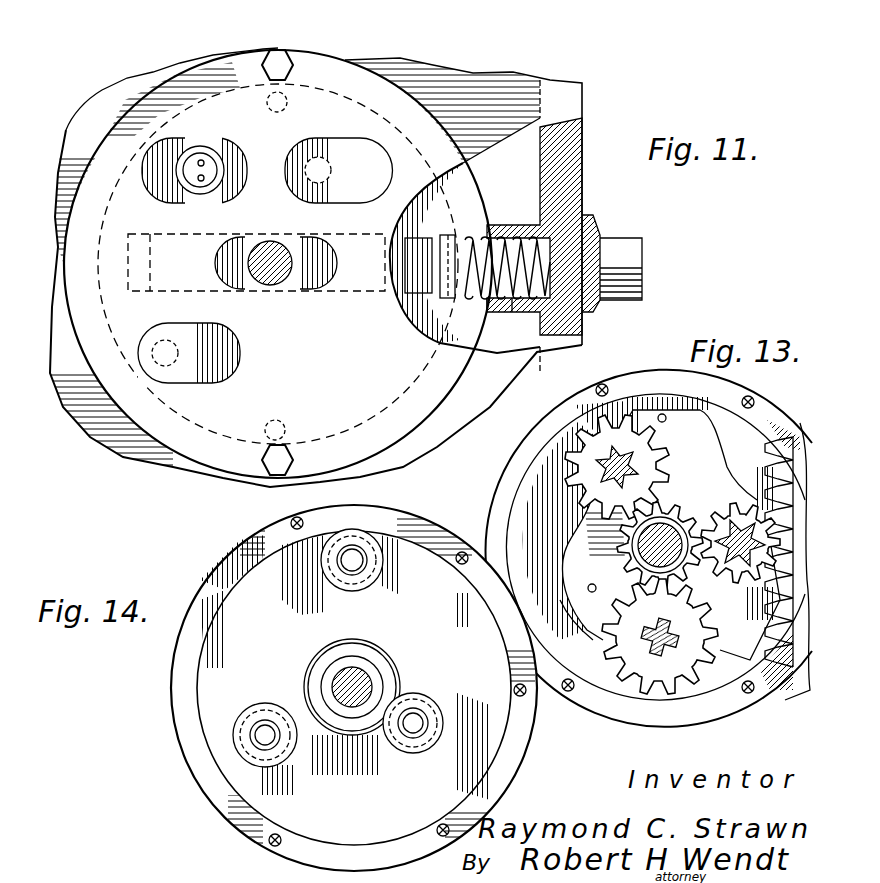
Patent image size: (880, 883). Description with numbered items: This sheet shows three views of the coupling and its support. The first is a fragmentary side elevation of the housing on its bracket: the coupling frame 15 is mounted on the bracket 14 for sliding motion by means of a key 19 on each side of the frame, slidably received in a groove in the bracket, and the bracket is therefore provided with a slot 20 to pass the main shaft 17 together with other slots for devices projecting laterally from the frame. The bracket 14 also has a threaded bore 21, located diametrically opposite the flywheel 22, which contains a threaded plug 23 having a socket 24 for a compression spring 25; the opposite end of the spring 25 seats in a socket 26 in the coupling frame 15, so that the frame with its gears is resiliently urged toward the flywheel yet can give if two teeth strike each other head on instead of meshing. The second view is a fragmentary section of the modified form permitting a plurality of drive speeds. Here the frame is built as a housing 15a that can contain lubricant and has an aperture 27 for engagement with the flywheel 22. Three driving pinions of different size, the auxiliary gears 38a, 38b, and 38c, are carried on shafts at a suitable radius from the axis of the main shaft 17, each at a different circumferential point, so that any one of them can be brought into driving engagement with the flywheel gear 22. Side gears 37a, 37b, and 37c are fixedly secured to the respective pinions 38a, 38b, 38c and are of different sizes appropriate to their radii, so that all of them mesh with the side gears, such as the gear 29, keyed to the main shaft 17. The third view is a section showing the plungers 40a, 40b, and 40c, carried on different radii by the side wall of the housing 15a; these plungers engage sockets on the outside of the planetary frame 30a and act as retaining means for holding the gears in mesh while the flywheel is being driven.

In FIG. 11, the bracket 14 is at (475, 108).
In FIG. 11, the coupling frame 15 is at (440, 206).
In FIG. 14, the housing 15a is at (482, 742).
In FIG. 11, the main shaft 17 is at (296, 286).
In FIG. 13, the main shaft 17 is at (666, 522).
In FIG. 14, the main shaft 17 is at (362, 680).
In FIG. 11, the key 19 is at (418, 238).
In FIG. 11, the slot 20 is at (322, 247).
In FIG. 11, the threaded bore 21 is at (592, 220).
In FIG. 13, the flywheel 22 is at (790, 690).
In FIG. 11, the threaded plug 23 is at (612, 240).
In FIG. 11, the socket 24 is at (512, 304).
In FIG. 11, the compression spring 25 is at (470, 238).
In FIG. 11, the socket 26 is at (470, 302).
In FIG. 13, the aperture 27 is at (778, 440).
In FIG. 13, the gear 29 is at (565, 550).
In FIG. 13, the planetary frame 30a is at (582, 617).
In FIG. 13, the side gear 37a is at (655, 455).
In FIG. 13, the side gear 37b is at (716, 630).
In FIG. 13, the side gear 37c is at (725, 518).
In FIG. 13, the auxiliary gear 38a is at (628, 450).
In FIG. 13, the auxiliary gear 38b is at (714, 654).
In FIG. 13, the auxiliary gear 38c is at (722, 500).
In FIG. 14, the plunger 40a is at (356, 557).
In FIG. 14, the plunger 40b is at (262, 730).
In FIG. 14, the plunger 40c is at (420, 720).